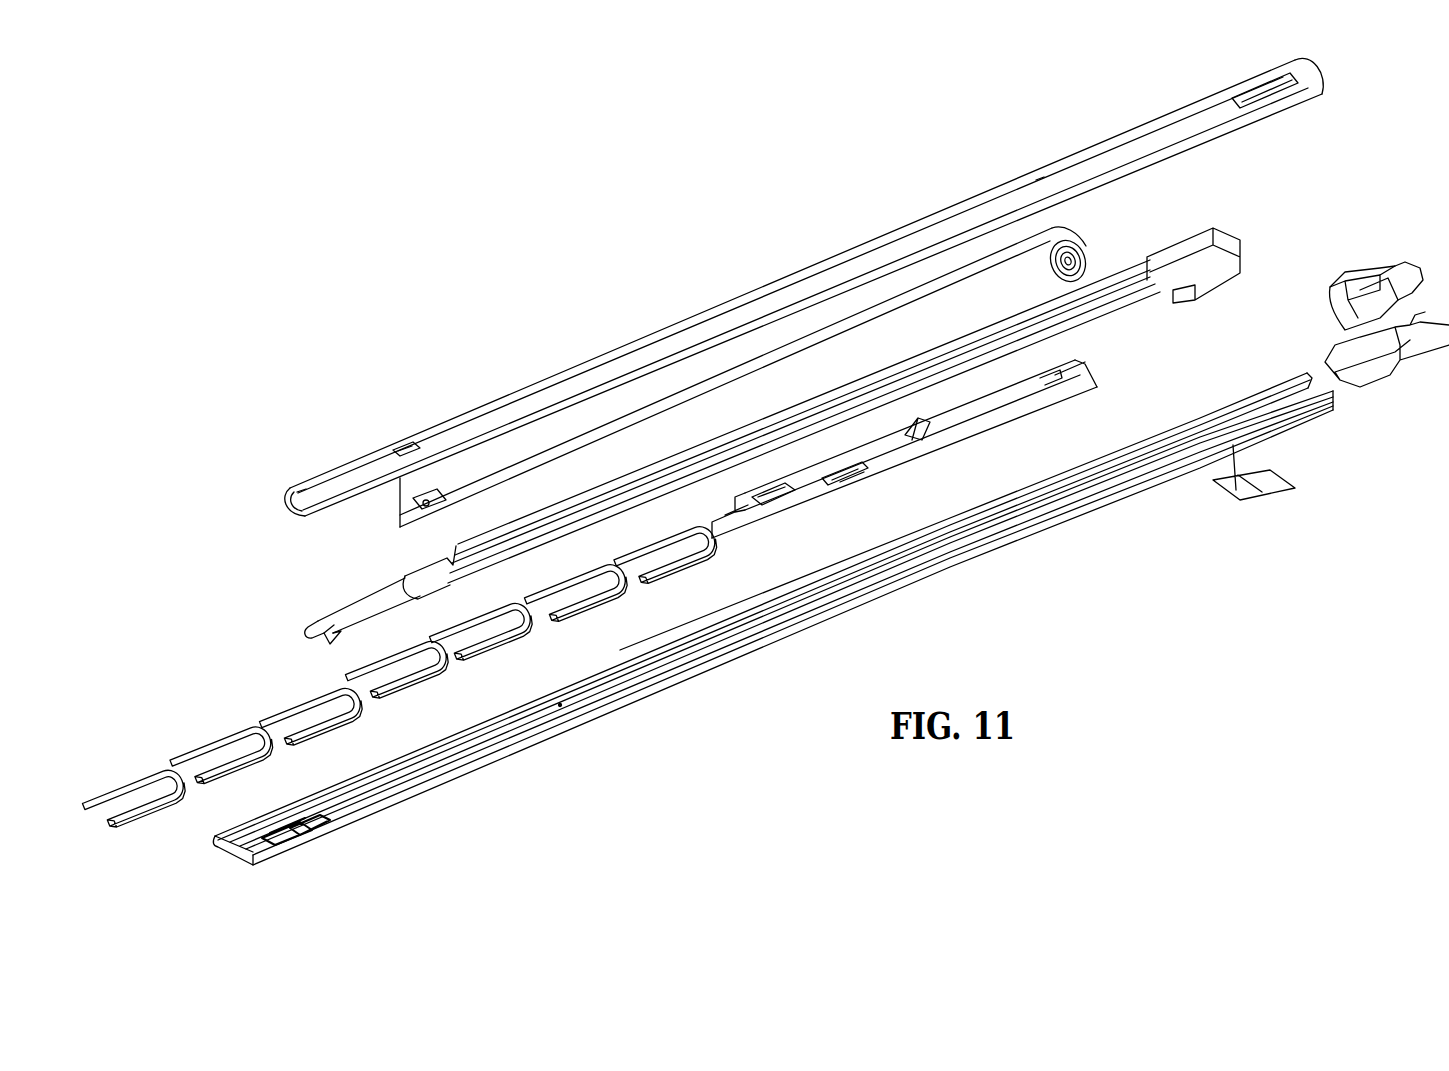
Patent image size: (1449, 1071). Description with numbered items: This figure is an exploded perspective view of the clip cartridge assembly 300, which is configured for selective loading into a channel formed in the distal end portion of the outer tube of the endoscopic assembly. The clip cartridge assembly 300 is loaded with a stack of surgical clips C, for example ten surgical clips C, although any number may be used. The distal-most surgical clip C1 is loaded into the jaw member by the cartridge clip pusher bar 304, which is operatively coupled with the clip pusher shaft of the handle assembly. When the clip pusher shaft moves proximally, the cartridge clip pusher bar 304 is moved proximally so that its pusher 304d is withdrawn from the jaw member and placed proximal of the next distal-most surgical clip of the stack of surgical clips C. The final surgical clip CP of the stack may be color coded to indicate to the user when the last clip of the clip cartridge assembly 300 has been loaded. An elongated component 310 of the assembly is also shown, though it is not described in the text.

The clip cartridge assembly 300 is at (993, 136).
The outer cover 310 is at (846, 255).
The cartridge clip pusher bar 304 is at (832, 386).
The pusher 304d is at (326, 611).
The surgical clips C is at (287, 691).
The distal-most surgical clip C1 is at (113, 783).
The final surgical clip CP is at (648, 540).